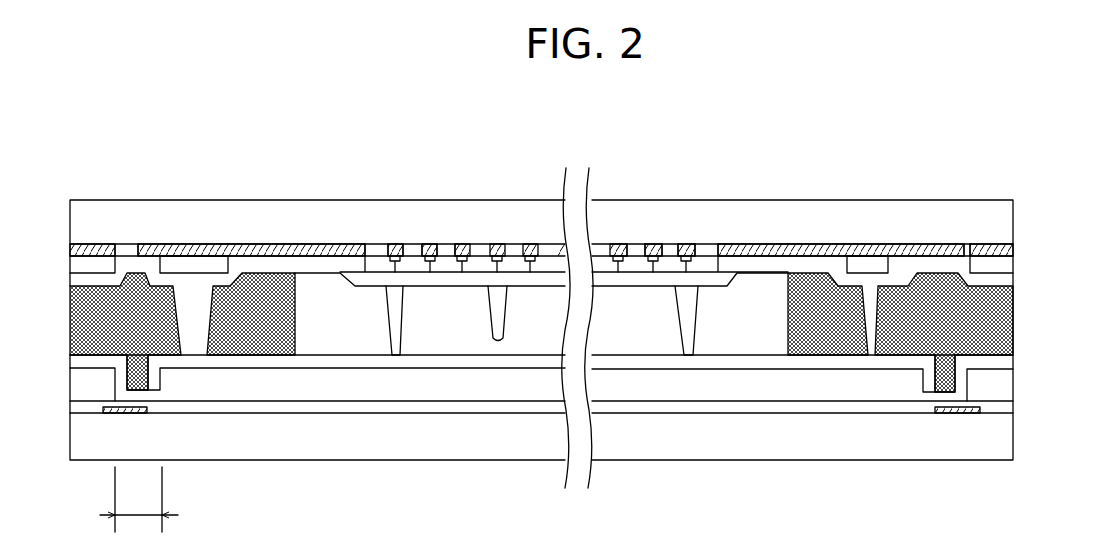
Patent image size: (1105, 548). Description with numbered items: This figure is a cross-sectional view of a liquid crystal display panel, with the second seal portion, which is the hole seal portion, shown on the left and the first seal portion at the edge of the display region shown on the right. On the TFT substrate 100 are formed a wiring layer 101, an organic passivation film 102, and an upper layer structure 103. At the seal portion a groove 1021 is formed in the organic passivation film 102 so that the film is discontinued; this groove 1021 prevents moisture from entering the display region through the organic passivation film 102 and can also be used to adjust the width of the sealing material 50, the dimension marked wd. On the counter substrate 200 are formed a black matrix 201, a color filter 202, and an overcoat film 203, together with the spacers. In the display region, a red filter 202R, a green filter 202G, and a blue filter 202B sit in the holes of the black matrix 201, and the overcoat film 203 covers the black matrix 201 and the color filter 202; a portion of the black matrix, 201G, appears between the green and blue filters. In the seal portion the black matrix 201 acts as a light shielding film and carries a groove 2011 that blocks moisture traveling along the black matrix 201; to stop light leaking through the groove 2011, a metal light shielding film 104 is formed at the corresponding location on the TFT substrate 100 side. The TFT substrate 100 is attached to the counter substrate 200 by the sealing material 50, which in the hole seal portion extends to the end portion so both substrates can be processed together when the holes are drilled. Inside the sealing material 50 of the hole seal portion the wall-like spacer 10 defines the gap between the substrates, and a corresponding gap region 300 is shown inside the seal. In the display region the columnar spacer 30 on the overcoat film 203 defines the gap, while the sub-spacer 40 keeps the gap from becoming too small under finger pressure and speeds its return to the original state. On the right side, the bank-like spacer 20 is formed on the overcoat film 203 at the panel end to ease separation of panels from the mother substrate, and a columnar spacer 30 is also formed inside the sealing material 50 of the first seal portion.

The counter substrate 200 is at (1002, 223).
The black matrix 201 is at (305, 248).
The groove 2011 is at (127, 250).
The color filter 202 is at (91, 267).
The red filter 202R is at (380, 262).
The green filter 202G is at (412, 260).
The blue filter 202B is at (447, 260).
The green light shielding portion 201G is at (673, 262).
The overcoat film 203 is at (327, 262).
The bank-like spacer 20 is at (997, 325).
The light emitting element 300 is at (541, 314).
The columnar spacer 30 is at (403, 313).
The sub-spacer 40 is at (507, 313).
The sealing material 50 is at (267, 340).
The wall-like spacer 10 is at (200, 323).
The TFT substrate 100 is at (1003, 440).
The wiring layer 101 is at (473, 408).
The organic passivation film 102 is at (395, 390).
The upper layer structure 103 is at (322, 365).
The metal light shielding film 104 is at (125, 417).
The groove 1021 is at (147, 385).
The width dimension wd is at (139, 499).